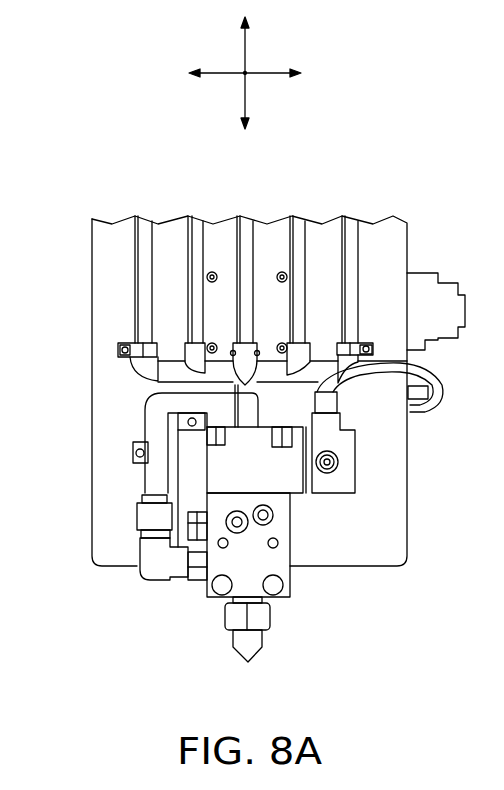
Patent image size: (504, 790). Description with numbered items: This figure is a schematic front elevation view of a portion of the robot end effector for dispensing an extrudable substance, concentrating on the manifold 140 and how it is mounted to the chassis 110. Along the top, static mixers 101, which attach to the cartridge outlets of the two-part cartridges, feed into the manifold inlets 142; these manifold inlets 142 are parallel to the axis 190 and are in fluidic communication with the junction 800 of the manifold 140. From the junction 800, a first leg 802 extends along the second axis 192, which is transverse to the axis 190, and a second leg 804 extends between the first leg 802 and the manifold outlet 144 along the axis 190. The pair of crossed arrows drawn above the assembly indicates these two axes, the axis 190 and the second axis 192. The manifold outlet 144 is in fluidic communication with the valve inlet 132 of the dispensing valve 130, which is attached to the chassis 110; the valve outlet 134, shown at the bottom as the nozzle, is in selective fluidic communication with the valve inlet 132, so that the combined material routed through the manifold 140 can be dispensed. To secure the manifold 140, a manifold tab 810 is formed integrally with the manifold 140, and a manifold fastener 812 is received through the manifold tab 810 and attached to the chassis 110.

The static mixers 101 is at (308, 233).
The chassis 110 is at (408, 507).
The dispensing valve 130 is at (291, 583).
The valve inlet 132 is at (132, 546).
The valve outlet 134 is at (232, 666).
The manifold 140 is at (160, 400).
The manifold inlets 142 is at (175, 333).
The manifold outlet 144 is at (130, 527).
The axis 190 is at (245, 95).
The second axis 192 is at (267, 73).
The junction 800 is at (238, 373).
The first leg 802 is at (217, 408).
The second leg 804 is at (145, 475).
The manifold tab 810 is at (133, 460).
The manifold fastener 812 is at (192, 419).